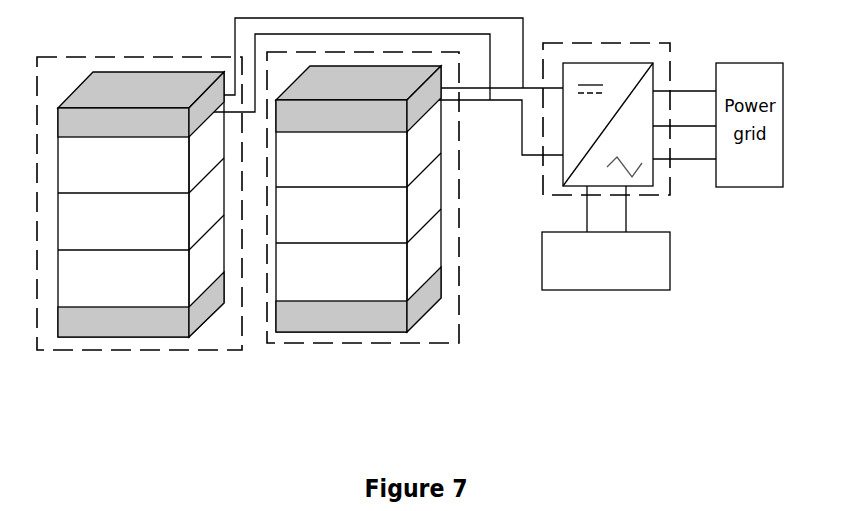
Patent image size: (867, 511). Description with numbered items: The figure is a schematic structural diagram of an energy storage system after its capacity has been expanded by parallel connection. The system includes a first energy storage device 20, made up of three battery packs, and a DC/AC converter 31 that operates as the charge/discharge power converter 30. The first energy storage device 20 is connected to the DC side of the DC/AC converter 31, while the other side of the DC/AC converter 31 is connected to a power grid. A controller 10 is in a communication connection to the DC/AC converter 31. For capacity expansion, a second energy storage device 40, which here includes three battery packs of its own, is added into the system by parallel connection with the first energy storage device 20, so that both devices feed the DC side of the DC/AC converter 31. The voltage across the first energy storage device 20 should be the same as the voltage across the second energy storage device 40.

The controller 10 is at (671, 253).
The first energy storage device 20 is at (459, 193).
The charge/discharge power converter 30 is at (637, 124).
The DC/AC converter 31 is at (620, 62).
The second energy storage device 40 is at (115, 57).